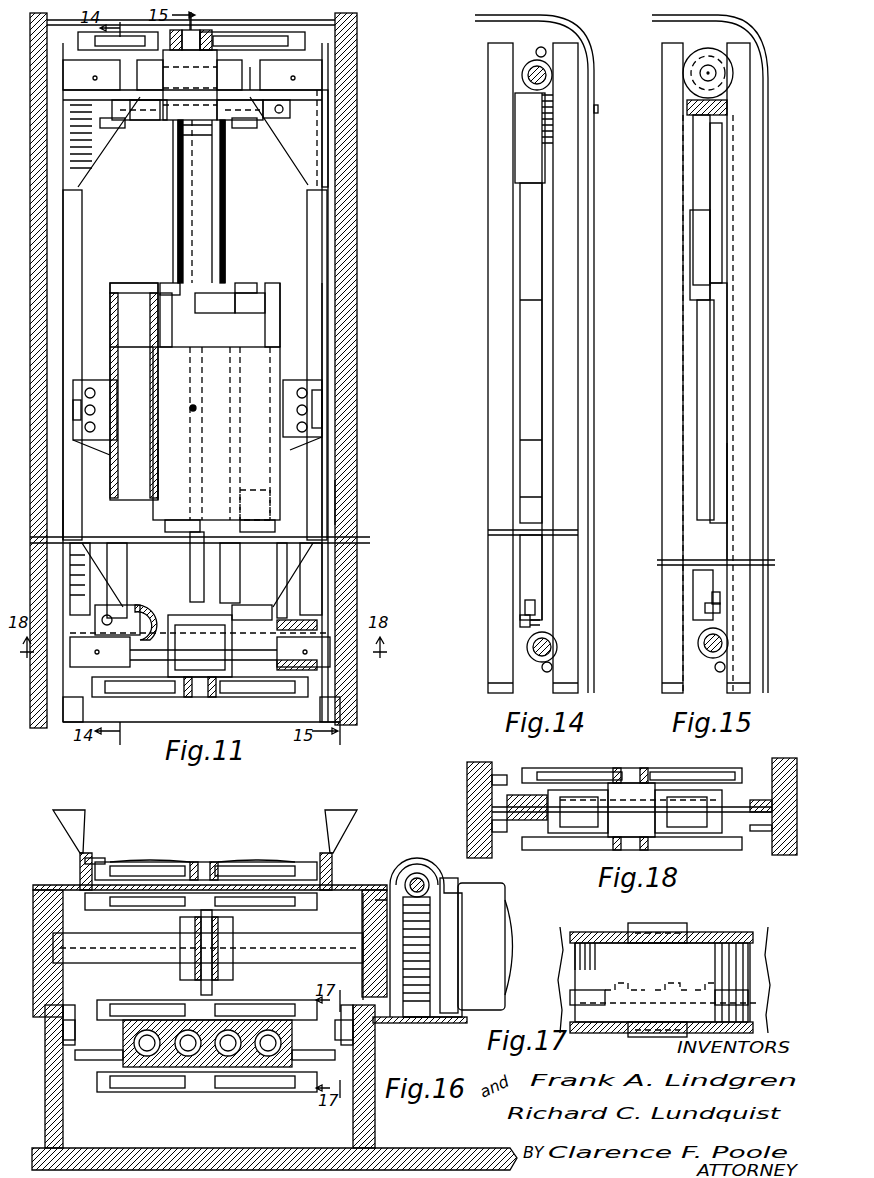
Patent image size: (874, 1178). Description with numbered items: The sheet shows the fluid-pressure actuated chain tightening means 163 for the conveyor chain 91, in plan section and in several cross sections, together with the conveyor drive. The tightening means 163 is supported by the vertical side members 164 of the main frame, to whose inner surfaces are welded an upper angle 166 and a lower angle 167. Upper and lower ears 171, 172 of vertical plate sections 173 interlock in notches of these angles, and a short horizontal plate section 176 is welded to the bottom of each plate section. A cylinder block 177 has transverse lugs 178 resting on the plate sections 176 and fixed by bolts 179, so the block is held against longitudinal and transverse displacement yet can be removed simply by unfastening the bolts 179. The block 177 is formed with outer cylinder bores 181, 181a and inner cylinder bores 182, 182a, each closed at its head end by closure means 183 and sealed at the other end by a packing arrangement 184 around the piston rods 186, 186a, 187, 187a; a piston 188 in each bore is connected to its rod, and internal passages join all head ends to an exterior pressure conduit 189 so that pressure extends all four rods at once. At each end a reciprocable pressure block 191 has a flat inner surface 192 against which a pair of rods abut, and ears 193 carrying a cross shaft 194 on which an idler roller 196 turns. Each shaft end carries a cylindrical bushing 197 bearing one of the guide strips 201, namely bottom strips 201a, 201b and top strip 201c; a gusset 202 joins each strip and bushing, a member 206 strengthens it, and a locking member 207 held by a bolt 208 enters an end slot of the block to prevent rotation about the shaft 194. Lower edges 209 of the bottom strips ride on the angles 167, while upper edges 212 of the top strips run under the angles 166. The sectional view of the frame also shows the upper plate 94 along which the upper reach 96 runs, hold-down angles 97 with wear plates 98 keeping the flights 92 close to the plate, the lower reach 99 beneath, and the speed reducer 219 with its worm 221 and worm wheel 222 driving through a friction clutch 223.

In FIG. 11, the conveyor chain 91 is at (205, 30).
In FIG. 18, the conveyor chain 91 is at (622, 768).
In FIG. 11, the flights 92 is at (303, 37).
In FIG. 18, the flights 92 is at (732, 768).
In FIG. 16, the flights 92 is at (133, 893).
In FIG. 16, the upper horizontal plate 94 is at (258, 862).
In FIG. 16, the upper reach 96 is at (165, 862).
In FIG. 16, the hold-down angles 97 is at (92, 850).
In FIG. 16, the inner wear plates 98 is at (105, 858).
In FIG. 16, the lower reach 99 is at (245, 905).
In FIG. 11, the chain tightening means 163 is at (340, 160).
In FIG. 11, the vertical side members 164 is at (348, 420).
In FIG. 16, the vertical side members 164 is at (63, 1130).
In FIG. 11, the upper angle 166 is at (340, 705).
In FIG. 14, the upper angle 166 is at (533, 368).
In FIG. 15, the upper angle 166 is at (662, 333).
In FIG. 18, the upper angle 166 is at (497, 768).
In FIG. 17, the upper angle 166 is at (608, 932).
In FIG. 16, the upper angle 166 is at (70, 1005).
In FIG. 11, the lower angle 167 is at (317, 317).
In FIG. 14, the lower angle 167 is at (536, 354).
In FIG. 15, the lower angle 167 is at (745, 333).
In FIG. 18, the lower angle 167 is at (505, 850).
In FIG. 17, the lower angle 167 is at (649, 1041).
In FIG. 16, the lower angle 167 is at (70, 1040).
In FIG. 11, the upper ear 171 is at (320, 403).
In FIG. 17, the upper ear 171 is at (672, 923).
In FIG. 17, the lower ear 172 is at (645, 1037).
In FIG. 17, the vertical plate section 173 is at (658, 974).
In FIG. 11, the horizontal plate section 176 is at (283, 377).
In FIG. 17, the horizontal plate section 176 is at (570, 988).
In FIG. 16, the horizontal plate section 176 is at (305, 1060).
In FIG. 11, the cylinder block 177 is at (195, 401).
In FIG. 15, the cylinder block 177 is at (723, 338).
In FIG. 16, the cylinder block 177 is at (270, 1067).
In FIG. 11, the transverse lugs 178 is at (290, 443).
In FIG. 11, the bolts 179 is at (300, 380).
In FIG. 11, the outer cylinder bore 181 is at (137, 467).
In FIG. 16, the outer cylinder bore 181 is at (138, 1057).
In FIG. 11, the outer cylinder bore 181a is at (262, 310).
In FIG. 16, the outer cylinder bore 181a is at (262, 1057).
In FIG. 11, the inner cylinder bore 182 is at (183, 380).
In FIG. 16, the inner cylinder bore 182 is at (180, 1057).
In FIG. 11, the inner cylinder bore 182a is at (235, 330).
In FIG. 16, the inner cylinder bore 182a is at (220, 1057).
In FIG. 11, the closure means 183 is at (117, 280).
In FIG. 11, the packing arrangement 184 is at (153, 277).
In FIG. 11, the piston rod 186 is at (160, 580).
In FIG. 11, the piston rod 186a is at (229, 573).
In FIG. 11, the piston rod 187 is at (168, 163).
In FIG. 11, the piston rod 187a is at (222, 163).
In FIG. 15, the piston rod 187a is at (718, 180).
In FIG. 11, the piston 188 is at (260, 490).
In FIG. 11, the pressure conduit 189 is at (196, 408).
In FIG. 11, the pressure block 191 is at (150, 97).
In FIG. 11, the flat inner surface 192 is at (177, 137).
In FIG. 18, the flat inner surface 192 is at (668, 790).
In FIG. 11, the ears 193 is at (132, 125).
In FIG. 18, the ears 193 is at (575, 790).
In FIG. 11, the cross shaft 194 is at (250, 67).
In FIG. 14, the cross shaft 194 is at (522, 74).
In FIG. 15, the cross shaft 194 is at (700, 77).
In FIG. 11, the idler roller 196 is at (226, 118).
In FIG. 15, the idler roller 196 is at (708, 48).
In FIG. 18, the idler roller 196 is at (645, 845).
In FIG. 16, the idler roller 196 is at (206, 952).
In FIG. 11, the cylindrical bushing 197 is at (322, 67).
In FIG. 11, the guide strips 201 is at (65, 523).
In FIG. 11, the bottom guide strip 201a is at (63, 248).
In FIG. 14, the bottom guide strip 201a is at (548, 222).
In FIG. 11, the bottom guide strip 201b is at (333, 503).
In FIG. 15, the bottom guide strip 201b is at (730, 485).
In FIG. 11, the top guide strip 201c is at (322, 250).
In FIG. 11, the gusset 202 is at (287, 160).
In FIG. 11, the longitudinally extending member 206 is at (82, 172).
In FIG. 11, the locking member 207 is at (290, 110).
In FIG. 14, the locking member 207 is at (528, 605).
In FIG. 15, the locking member 207 is at (723, 603).
In FIG. 11, the bolt 208 is at (297, 100).
In FIG. 14, the bolt 208 is at (520, 621).
In FIG. 15, the bolt 208 is at (717, 615).
In FIG. 14, the lower edges 209 is at (555, 243).
In FIG. 15, the lower edges 209 is at (723, 423).
In FIG. 11, the upper edges 212 is at (322, 240).
In FIG. 14, the upper edges 212 is at (528, 420).
In FIG. 15, the upper edges 212 is at (695, 273).
In FIG. 16, the speed reducer 219 is at (412, 858).
In FIG. 16, the worm 221 is at (420, 873).
In FIG. 16, the worm wheel 222 is at (418, 1023).
In FIG. 16, the friction clutch 223 is at (476, 945).